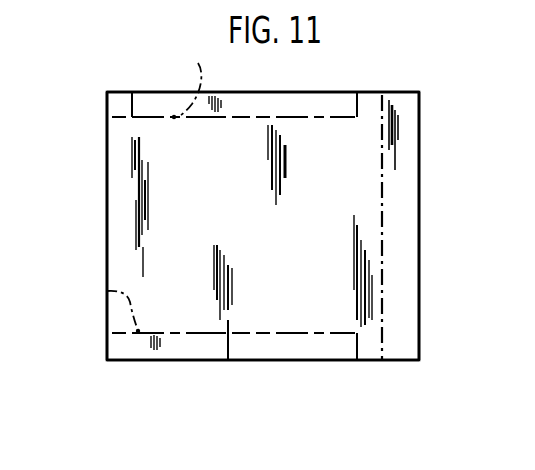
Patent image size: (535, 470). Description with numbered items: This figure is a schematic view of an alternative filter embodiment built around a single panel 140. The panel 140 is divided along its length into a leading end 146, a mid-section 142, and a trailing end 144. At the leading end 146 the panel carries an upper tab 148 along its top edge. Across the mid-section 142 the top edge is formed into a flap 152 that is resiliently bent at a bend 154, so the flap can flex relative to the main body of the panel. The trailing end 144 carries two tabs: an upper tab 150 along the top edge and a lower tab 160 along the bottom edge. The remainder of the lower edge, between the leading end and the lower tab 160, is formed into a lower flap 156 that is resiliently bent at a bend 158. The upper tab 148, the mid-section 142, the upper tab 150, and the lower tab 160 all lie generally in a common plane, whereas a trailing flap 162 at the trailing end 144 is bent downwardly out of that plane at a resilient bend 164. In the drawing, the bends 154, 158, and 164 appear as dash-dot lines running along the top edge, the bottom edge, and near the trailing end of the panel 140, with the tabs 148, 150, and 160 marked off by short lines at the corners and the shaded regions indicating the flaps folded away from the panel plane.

The panel 140 is at (246, 214).
The mid-section 142 is at (228, 360).
The trailing end 144 is at (370, 200).
The leading end 146 is at (118, 201).
The upper tab 148 is at (122, 100).
The upper tab 150 is at (368, 99).
The flap 152 is at (306, 97).
The resilient bend 154 is at (196, 62).
The lower flap 156 is at (259, 346).
The resilient bend 158 is at (100, 296).
The lower tab 160 is at (370, 350).
The trailing flap 162 is at (404, 137).
The resilient bend 164 is at (383, 262).